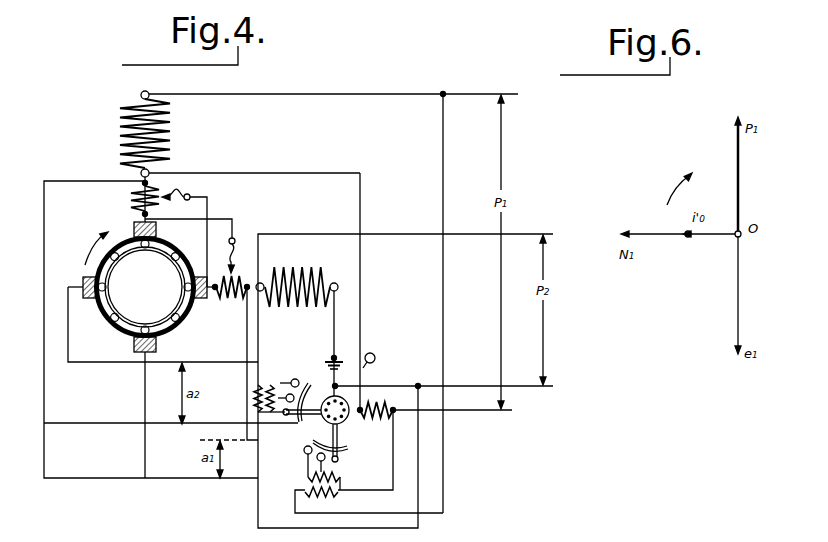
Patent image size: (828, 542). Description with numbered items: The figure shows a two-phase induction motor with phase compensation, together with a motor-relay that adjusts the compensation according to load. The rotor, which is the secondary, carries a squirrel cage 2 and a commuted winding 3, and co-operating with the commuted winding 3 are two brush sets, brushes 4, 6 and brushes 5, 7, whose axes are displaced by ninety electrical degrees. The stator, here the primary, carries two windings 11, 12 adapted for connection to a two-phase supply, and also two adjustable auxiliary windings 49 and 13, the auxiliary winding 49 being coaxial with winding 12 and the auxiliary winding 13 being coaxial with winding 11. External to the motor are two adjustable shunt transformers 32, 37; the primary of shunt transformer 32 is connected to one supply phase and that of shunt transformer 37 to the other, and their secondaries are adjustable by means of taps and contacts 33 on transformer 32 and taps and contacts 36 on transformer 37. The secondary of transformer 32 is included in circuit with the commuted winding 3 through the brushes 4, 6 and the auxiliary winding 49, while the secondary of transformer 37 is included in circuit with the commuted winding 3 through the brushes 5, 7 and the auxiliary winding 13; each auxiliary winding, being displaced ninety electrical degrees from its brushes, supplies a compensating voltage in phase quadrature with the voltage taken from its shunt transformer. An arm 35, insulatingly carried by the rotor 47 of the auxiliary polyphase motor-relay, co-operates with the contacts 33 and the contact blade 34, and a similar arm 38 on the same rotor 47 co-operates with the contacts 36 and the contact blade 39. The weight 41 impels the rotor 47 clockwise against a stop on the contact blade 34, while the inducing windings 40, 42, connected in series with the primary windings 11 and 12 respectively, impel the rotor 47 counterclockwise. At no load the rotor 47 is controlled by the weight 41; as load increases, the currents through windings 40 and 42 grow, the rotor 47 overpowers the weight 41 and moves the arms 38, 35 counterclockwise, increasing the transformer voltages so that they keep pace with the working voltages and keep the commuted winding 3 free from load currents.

The stator winding 12 is at (158, 134).
The adjustable auxiliary winding 49 is at (155, 234).
The commuted winding 3 is at (104, 331).
The squirrel cage 2 is at (166, 319).
The brush 5 is at (151, 230).
The brush 7 is at (151, 344).
The brush 6 is at (86, 282).
The brush 4 is at (199, 278).
The adjustable auxiliary winding 13 is at (231, 279).
The stator winding 11 is at (297, 304).
The inducing winding 40 is at (347, 361).
The weight 41 is at (382, 361).
The rotor 47 is at (352, 425).
The inducing winding 42 is at (387, 400).
The shunt transformer 32 is at (266, 379).
The taps and contacts 33 is at (298, 378).
The contact blade 34 is at (303, 428).
The arm 35 is at (314, 402).
The arm 38 is at (346, 443).
The contact blade 39 is at (350, 457).
The taps and contacts 36 is at (303, 463).
The shunt transformer 37 is at (345, 484).